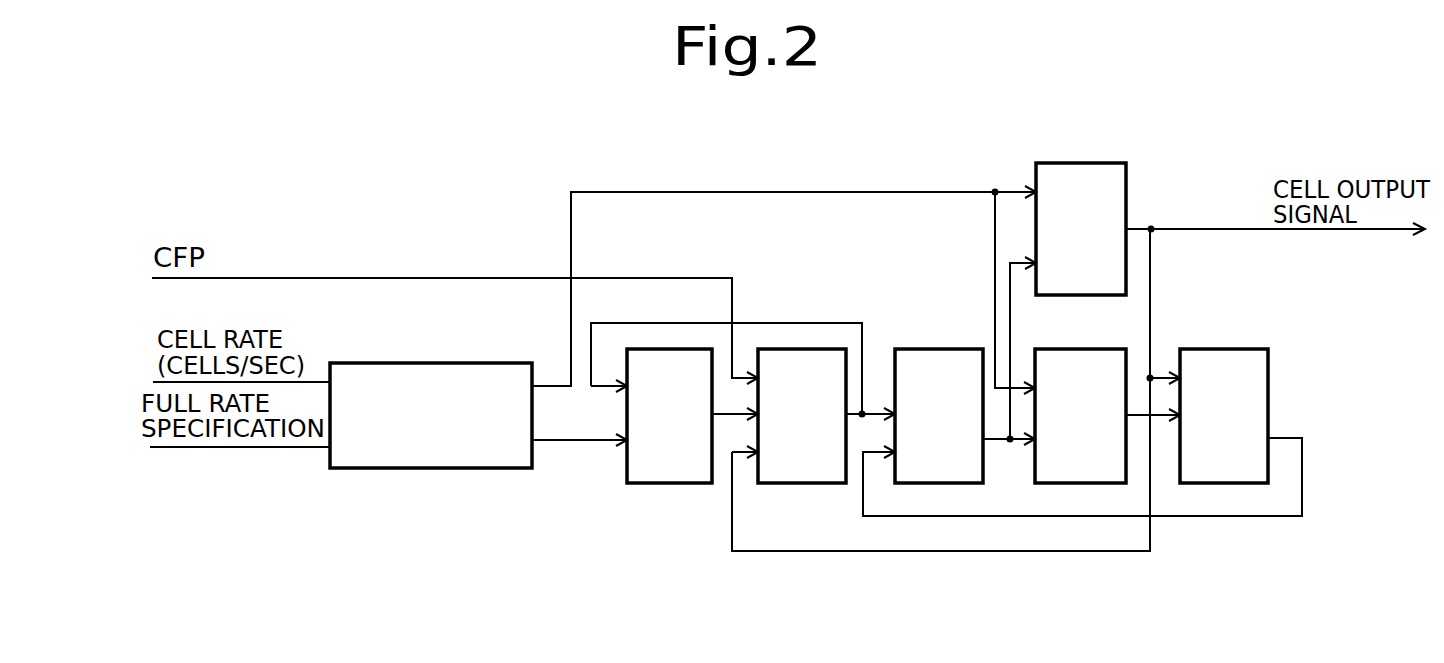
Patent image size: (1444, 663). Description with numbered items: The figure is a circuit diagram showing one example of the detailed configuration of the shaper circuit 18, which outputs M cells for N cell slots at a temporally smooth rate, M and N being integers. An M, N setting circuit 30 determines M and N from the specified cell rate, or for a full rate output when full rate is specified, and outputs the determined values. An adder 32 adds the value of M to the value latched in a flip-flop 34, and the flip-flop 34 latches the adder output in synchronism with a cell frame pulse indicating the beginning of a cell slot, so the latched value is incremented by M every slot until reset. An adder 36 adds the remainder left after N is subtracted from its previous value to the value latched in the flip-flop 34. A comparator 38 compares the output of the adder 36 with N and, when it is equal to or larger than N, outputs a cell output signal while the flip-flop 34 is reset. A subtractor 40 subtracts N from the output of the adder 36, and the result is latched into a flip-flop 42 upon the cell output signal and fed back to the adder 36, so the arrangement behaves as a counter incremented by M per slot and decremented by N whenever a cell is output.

The shaper circuit 18 is at (760, 608).
The M, N setting circuit 30 is at (463, 468).
The adder 32 is at (650, 483).
The flip-flop 34 is at (783, 483).
The adder 36 is at (927, 349).
The comparator 38 is at (1088, 163).
The subtractor 40 is at (1083, 349).
The flip-flop 42 is at (1228, 349).